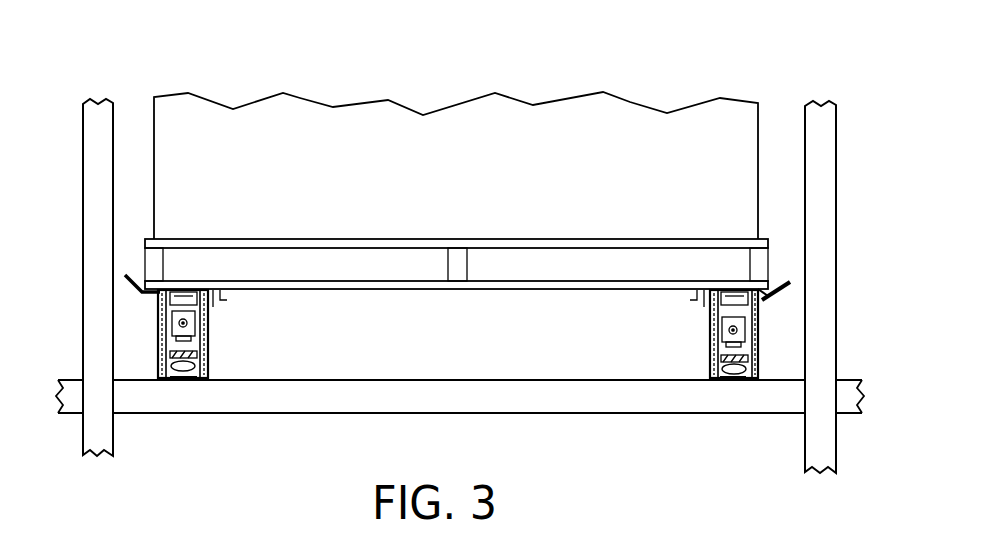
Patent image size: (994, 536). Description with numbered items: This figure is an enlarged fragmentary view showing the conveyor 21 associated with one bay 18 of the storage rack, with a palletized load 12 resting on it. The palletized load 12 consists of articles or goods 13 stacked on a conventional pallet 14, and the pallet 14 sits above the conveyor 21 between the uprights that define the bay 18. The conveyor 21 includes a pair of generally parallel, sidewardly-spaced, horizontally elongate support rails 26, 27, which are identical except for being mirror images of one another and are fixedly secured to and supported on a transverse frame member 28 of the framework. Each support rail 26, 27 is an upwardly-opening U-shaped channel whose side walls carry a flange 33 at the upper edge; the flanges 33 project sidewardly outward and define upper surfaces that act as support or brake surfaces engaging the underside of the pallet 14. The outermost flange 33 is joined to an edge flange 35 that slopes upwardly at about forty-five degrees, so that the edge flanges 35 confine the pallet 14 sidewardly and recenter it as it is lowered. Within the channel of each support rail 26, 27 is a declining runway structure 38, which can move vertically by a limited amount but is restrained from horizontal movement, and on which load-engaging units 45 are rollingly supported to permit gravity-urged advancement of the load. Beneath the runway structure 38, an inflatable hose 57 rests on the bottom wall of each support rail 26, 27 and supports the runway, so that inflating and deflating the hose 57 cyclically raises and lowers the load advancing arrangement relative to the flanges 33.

The palletized load 12 is at (331, 103).
The articles or goods 13 is at (536, 128).
The pallet 14 is at (382, 267).
The bay 18 is at (795, 173).
The conveyor 21 is at (247, 385).
The support rail 26 is at (213, 330).
The support rail 27 is at (703, 335).
The transverse frame member 28 is at (588, 402).
The flange 33 is at (766, 300).
The edge flange 35 is at (792, 283).
The runway structure 38 is at (708, 348).
The load-engaging unit 45 is at (158, 297).
The inflatable hose 57 is at (183, 376).